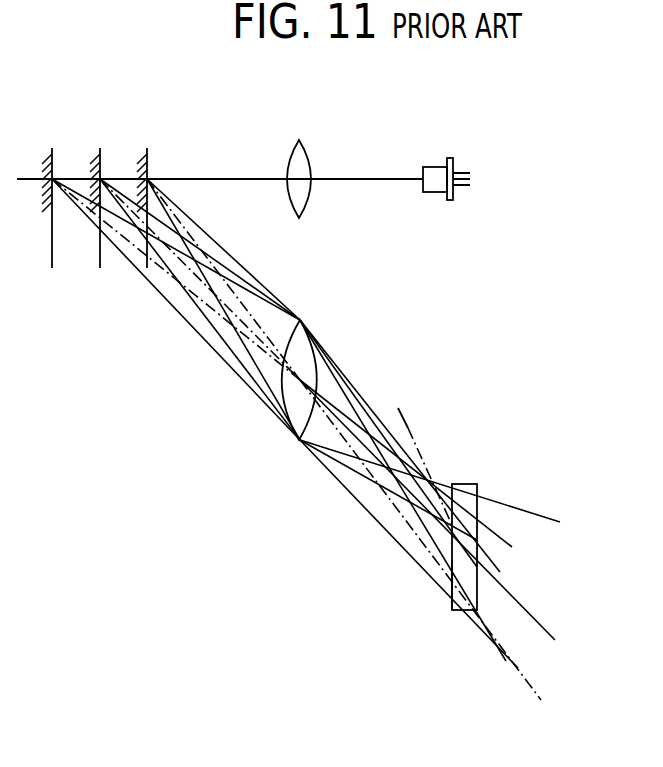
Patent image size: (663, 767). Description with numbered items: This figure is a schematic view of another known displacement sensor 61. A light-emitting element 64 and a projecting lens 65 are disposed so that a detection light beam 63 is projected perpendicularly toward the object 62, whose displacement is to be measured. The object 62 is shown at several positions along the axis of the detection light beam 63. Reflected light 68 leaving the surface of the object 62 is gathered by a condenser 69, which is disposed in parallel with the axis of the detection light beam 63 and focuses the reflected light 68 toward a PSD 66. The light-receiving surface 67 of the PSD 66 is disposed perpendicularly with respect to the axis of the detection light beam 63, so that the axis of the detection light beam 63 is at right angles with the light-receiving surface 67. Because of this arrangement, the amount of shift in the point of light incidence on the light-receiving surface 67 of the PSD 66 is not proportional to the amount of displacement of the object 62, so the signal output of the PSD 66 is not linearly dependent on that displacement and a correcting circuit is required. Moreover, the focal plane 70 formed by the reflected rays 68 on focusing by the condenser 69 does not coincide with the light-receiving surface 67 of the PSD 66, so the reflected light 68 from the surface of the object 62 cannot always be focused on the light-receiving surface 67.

The displacement sensor 61 is at (432, 262).
The object 62 is at (148, 158).
The detection light beam 63 is at (210, 179).
The light-emitting element 64 is at (430, 167).
The projecting lens 65 is at (302, 160).
The PSD 66 is at (470, 487).
The light-receiving surface 67 is at (452, 598).
The reflected light 68 is at (163, 301).
The condenser 69 is at (302, 348).
The focal plane 70 is at (410, 413).